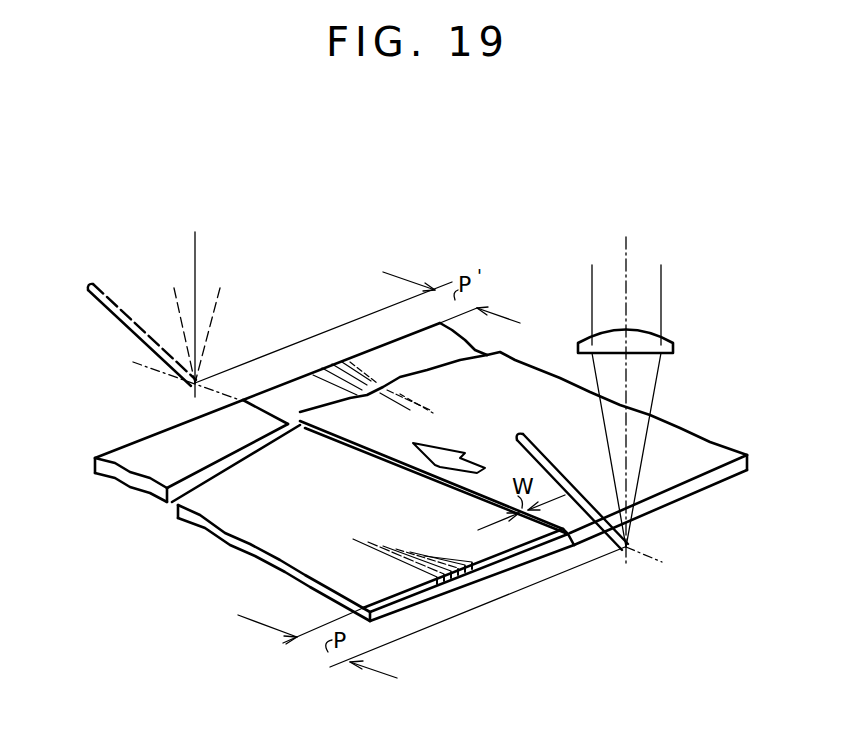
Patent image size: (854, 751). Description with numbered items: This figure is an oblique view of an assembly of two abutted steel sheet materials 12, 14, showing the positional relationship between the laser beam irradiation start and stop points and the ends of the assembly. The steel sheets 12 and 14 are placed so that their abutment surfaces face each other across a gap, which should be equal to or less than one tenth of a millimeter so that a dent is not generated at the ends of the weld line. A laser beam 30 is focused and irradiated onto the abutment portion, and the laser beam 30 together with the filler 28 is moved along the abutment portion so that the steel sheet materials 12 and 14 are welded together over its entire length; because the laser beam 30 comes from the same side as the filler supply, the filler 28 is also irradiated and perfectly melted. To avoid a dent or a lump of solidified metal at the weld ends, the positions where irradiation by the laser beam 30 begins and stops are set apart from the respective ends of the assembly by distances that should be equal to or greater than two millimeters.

The steel sheet material 12 is at (242, 505).
The steel sheet material 14 is at (523, 387).
The filler 28 is at (126, 312).
The laser beam 30 is at (218, 300).